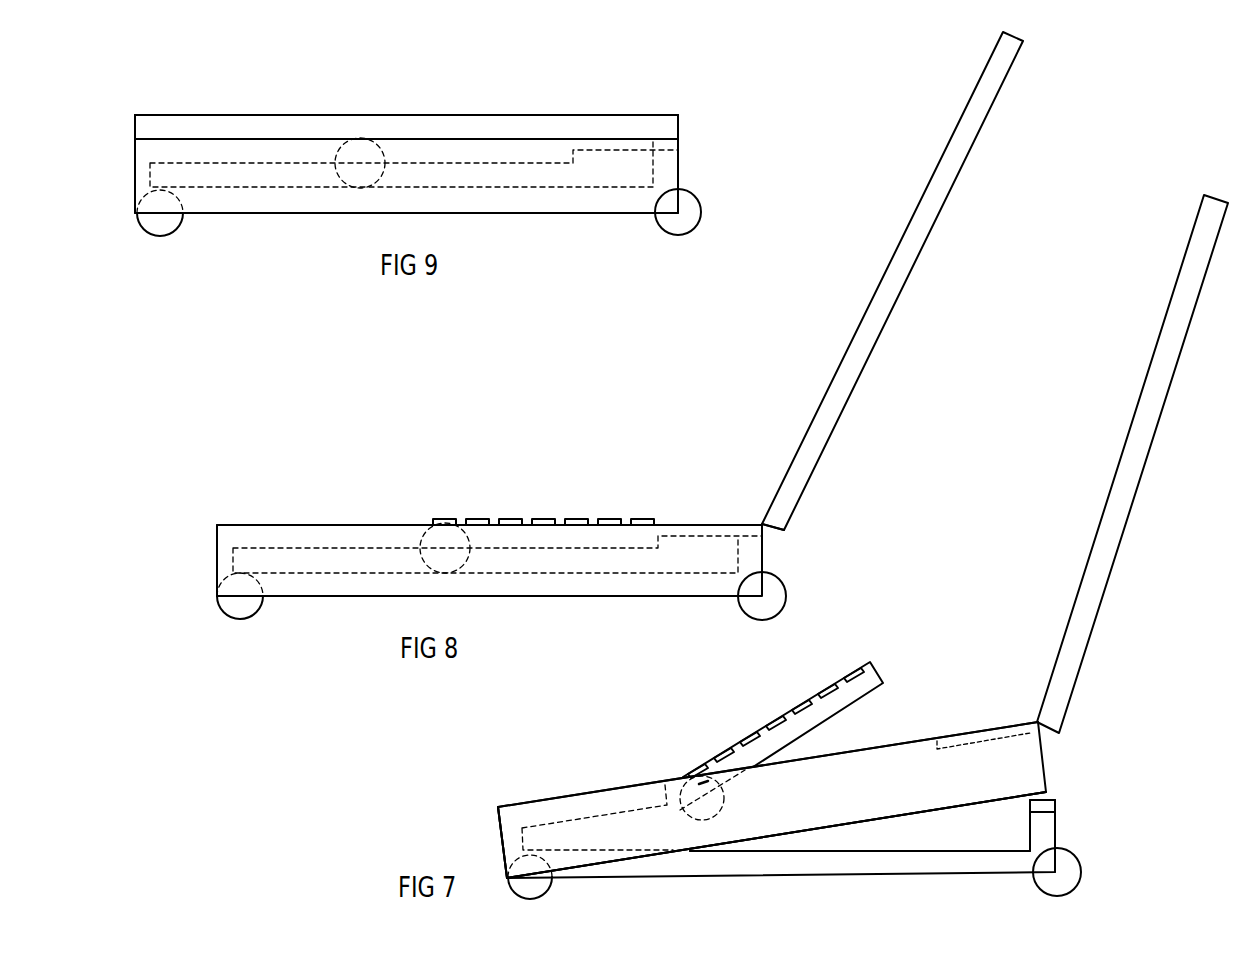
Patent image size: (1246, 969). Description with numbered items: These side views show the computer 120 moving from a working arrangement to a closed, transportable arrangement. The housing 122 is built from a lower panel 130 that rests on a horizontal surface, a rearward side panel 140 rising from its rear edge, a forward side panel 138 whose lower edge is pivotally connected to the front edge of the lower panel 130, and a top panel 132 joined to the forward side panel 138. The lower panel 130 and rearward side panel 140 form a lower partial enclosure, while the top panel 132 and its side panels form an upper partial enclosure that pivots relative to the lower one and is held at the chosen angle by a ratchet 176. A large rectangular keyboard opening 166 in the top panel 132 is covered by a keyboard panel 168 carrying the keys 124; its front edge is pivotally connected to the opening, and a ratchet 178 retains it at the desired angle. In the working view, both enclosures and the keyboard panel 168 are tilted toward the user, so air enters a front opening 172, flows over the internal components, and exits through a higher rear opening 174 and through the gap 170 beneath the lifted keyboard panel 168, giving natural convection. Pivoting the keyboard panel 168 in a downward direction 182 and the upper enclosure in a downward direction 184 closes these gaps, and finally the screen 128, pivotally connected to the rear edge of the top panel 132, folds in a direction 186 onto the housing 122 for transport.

In FIG. 9, the computer 120 is at (165, 92).
In FIG. 8, the computer 120 is at (250, 497).
In FIG. 7, the computer 120 is at (412, 804).
In FIG. 9, the housing 122 is at (142, 153).
In FIG. 7, the housing 122 is at (498, 805).
In FIG. 7, the keys 124 is at (800, 703).
In FIG. 9, the screen 128 is at (525, 122).
In FIG. 8, the screen 128 is at (923, 237).
In FIG. 7, the screen 128 is at (1167, 389).
In FIG. 7, the lower panel 130 is at (933, 872).
In FIG. 8, the top panel 132 is at (378, 535).
In FIG. 7, the top panel 132 is at (578, 798).
In FIG. 7, the forward side panel 138 is at (508, 838).
In FIG. 7, the rearward side panel 140 is at (1057, 822).
In FIG. 7, the keyboard opening 166 is at (937, 747).
In FIG. 8, the keyboard panel 168 is at (643, 537).
In FIG. 7, the keyboard panel 168 is at (873, 665).
In FIG. 7, the gap 170 is at (890, 715).
In FIG. 7, the front opening 172 is at (755, 843).
In FIG. 7, the opening 174 is at (1020, 822).
In FIG. 7, the ratchet 176 is at (542, 885).
In FIG. 7, the ratchet 178 is at (724, 800).
In FIG. 8, the downward direction 182 is at (630, 508).
In FIG. 8, the downward direction 184 is at (747, 520).
In FIG. 9, the direction 186 is at (248, 105).